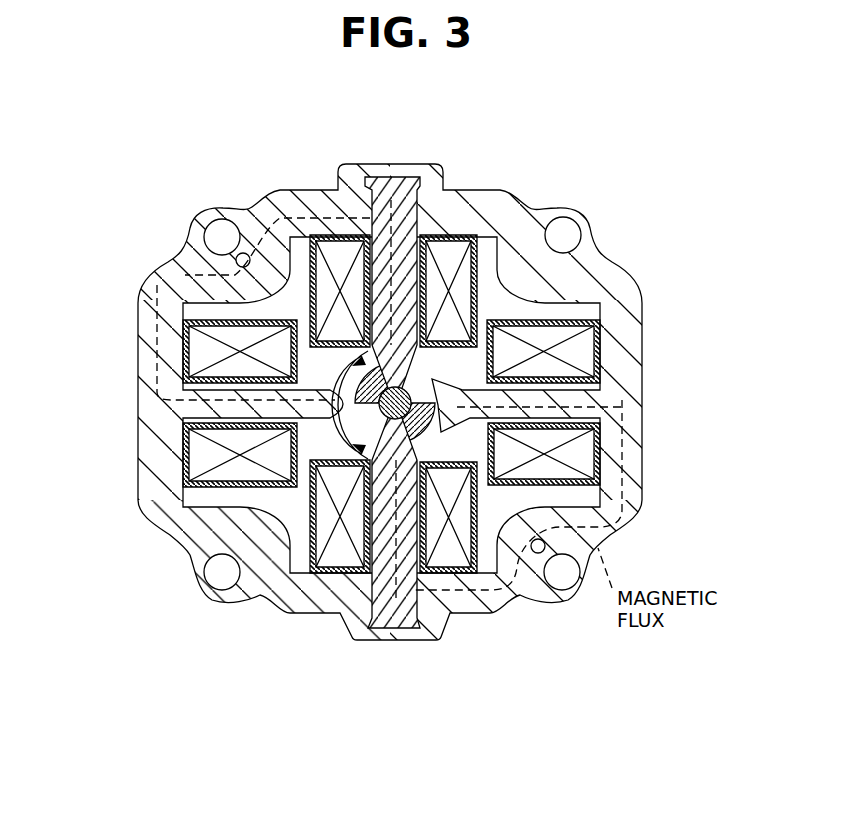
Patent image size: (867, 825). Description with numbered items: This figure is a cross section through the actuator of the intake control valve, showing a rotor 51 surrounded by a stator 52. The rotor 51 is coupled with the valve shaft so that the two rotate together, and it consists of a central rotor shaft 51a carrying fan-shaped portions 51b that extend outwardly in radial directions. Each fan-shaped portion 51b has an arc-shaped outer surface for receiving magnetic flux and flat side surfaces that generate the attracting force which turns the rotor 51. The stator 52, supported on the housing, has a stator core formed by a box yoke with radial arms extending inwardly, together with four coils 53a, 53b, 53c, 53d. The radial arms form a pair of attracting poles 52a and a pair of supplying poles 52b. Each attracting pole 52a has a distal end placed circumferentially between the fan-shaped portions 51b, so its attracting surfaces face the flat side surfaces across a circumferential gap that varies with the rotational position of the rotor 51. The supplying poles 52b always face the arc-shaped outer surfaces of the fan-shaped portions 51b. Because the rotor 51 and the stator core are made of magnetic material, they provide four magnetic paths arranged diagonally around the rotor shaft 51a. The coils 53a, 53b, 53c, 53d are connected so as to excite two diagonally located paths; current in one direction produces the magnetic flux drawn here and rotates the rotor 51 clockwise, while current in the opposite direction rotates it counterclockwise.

The rotor 51 is at (474, 385).
The rotor shaft 51a is at (413, 393).
The fan-shaped portions 51b is at (400, 373).
The stator 52 is at (303, 197).
The attracting poles 52a is at (379, 365).
The supplying poles 52b is at (330, 417).
The coil 53a is at (343, 260).
The coil 53b is at (552, 330).
The coil 53c is at (452, 553).
The coil 53d is at (202, 458).